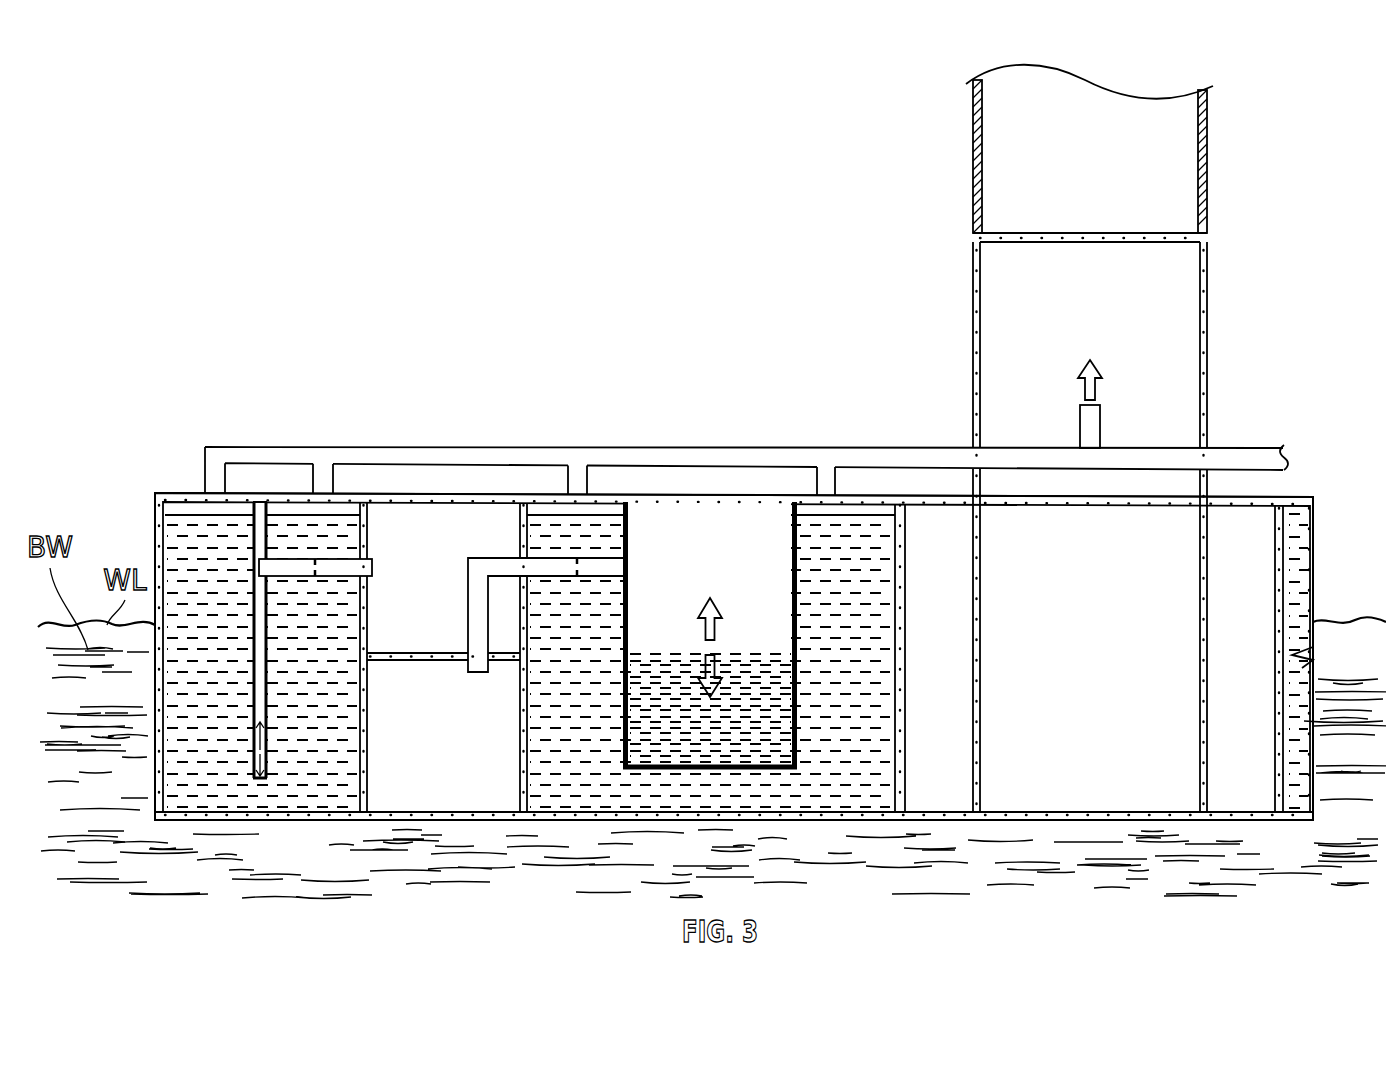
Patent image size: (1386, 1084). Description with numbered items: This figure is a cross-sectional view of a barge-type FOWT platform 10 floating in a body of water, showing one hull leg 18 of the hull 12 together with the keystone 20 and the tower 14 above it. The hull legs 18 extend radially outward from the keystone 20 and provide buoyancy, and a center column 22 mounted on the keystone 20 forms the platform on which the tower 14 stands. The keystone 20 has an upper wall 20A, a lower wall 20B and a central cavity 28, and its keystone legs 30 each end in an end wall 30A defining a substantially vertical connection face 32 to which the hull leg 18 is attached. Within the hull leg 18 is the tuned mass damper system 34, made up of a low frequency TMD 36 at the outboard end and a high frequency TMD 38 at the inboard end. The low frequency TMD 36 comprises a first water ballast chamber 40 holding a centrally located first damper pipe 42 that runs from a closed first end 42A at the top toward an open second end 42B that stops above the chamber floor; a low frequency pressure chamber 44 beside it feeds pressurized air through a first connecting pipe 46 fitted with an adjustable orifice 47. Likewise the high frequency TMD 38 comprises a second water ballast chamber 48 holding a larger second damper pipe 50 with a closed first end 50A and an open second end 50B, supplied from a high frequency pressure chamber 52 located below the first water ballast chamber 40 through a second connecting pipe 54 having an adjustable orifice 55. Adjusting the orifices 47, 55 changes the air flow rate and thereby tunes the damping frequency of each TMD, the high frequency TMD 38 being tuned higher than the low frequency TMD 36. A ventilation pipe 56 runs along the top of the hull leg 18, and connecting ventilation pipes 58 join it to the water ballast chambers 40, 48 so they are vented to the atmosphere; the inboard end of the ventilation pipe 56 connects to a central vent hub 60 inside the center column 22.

The FOWT platform 10 is at (519, 357).
The hull 12 is at (155, 761).
The tower 14 is at (972, 118).
The hull leg 18 is at (198, 827).
The keystone 20 is at (1148, 821).
The upper wall 20A is at (1235, 497).
The lower wall 20B is at (1040, 820).
The center column 22 is at (1209, 280).
The central cavity 28 is at (1150, 790).
The keystone leg 30 is at (960, 818).
The end wall 30A is at (900, 808).
The connection face 32 is at (1290, 751).
The tuned mass damper system 34 is at (772, 449).
The low frequency TMD 36 is at (319, 821).
The high frequency TMD 38 is at (646, 821).
The first water ballast chamber 40 is at (212, 803).
The first damper pipe 42 is at (248, 688).
The closed first end 42A is at (250, 507).
The open second end 42B is at (252, 765).
The low frequency pressure chamber 44 is at (428, 512).
The first connecting pipe 46 is at (350, 577).
The adjustable orifice 47 is at (315, 577).
The second water ballast chamber 48 is at (550, 800).
The second damper pipe 50 is at (797, 548).
The closed first end 50A is at (622, 505).
The open second end 50B is at (620, 763).
The high frequency pressure chamber 52 is at (452, 800).
The second connecting pipe 54 is at (468, 622).
The adjustable orifice 55 is at (577, 577).
The ventilation pipe 56 is at (545, 456).
The connecting ventilation pipe 58 is at (215, 478).
The central vent hub 60 is at (1092, 430).